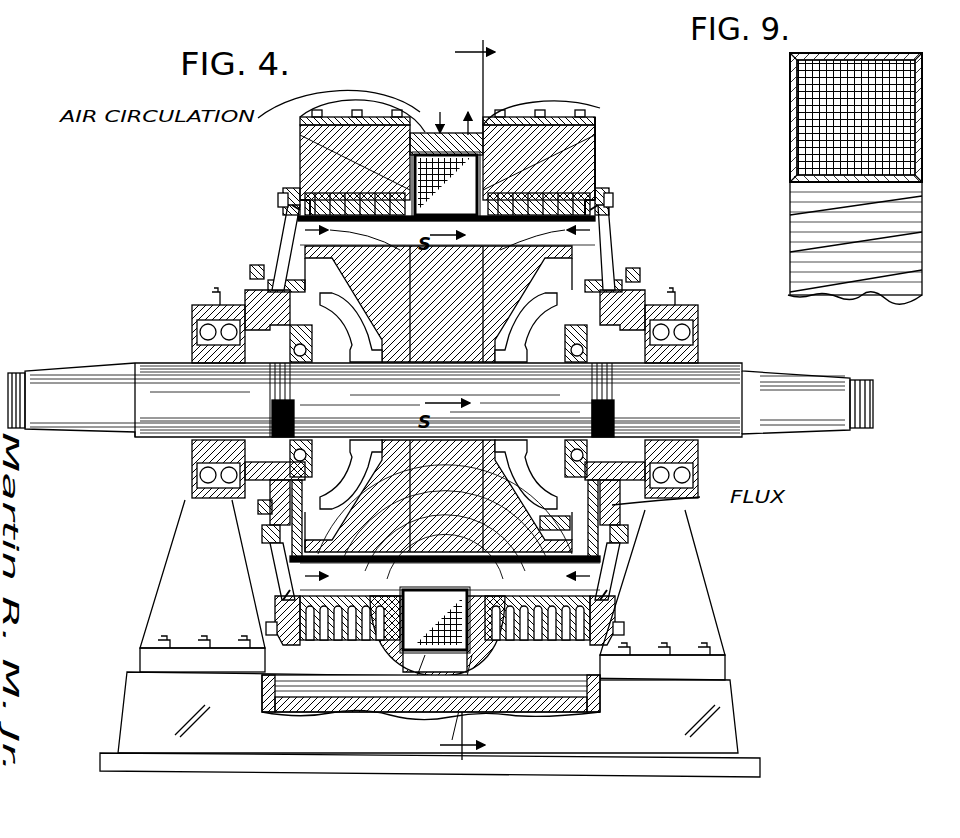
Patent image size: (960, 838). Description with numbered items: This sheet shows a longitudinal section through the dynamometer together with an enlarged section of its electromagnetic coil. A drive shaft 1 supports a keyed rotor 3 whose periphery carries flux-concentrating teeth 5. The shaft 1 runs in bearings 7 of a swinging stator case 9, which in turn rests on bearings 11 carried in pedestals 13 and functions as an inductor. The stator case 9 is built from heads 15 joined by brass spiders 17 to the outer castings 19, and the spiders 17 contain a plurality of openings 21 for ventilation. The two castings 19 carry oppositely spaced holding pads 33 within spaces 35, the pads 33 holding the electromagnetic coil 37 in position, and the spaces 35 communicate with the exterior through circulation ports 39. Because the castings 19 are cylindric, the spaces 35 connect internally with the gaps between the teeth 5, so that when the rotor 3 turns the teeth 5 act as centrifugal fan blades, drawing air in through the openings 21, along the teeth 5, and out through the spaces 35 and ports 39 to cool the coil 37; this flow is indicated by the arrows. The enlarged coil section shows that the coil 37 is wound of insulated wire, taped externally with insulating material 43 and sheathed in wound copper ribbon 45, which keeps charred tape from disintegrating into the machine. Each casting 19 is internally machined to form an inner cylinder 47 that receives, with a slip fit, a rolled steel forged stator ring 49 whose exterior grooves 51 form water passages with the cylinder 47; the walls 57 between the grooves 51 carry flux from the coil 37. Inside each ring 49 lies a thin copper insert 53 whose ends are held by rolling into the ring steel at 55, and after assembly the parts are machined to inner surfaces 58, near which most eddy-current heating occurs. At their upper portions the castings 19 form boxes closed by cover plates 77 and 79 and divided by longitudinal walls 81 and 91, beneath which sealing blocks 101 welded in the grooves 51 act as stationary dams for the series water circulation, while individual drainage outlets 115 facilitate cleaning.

In FIG. 4, the drive shaft 1 is at (722, 395).
In FIG. 4, the rotor 3 is at (505, 290).
In FIG. 4, the flux-concentrating teeth 5 is at (604, 607).
In FIG. 4, the bearings 7 is at (305, 375).
In FIG. 4, the stator case 9 is at (600, 180).
In FIG. 4, the bearings 11 is at (195, 320).
In FIG. 4, the pedestals 13 is at (180, 560).
In FIG. 4, the heads 15 is at (275, 292).
In FIG. 4, the brass spiders 17 is at (272, 268).
In FIG. 4, the outer castings 19 is at (305, 195).
In FIG. 4, the openings 21 is at (285, 235).
In FIG. 4, the holding pads 33 is at (435, 188).
In FIG. 4, the spaces 35 is at (305, 160).
In FIG. 4, the electromagnetic coil 37 is at (440, 402).
In FIG. 9, the electromagnetic coil 37 is at (858, 80).
In FIG. 4, the circulation ports 39 is at (442, 112).
In FIG. 9, the insulating material 43 is at (915, 110).
In FIG. 9, the copper ribbon 45 is at (840, 58).
In FIG. 4, the inner cylinder 47 is at (285, 190).
In FIG. 4, the stator ring 49 is at (612, 212).
In FIG. 4, the grooves 51 is at (278, 197).
In FIG. 4, the copper insert 53 is at (447, 401).
In FIG. 4, the rolled-in ends 55 is at (605, 225).
In FIG. 4, the walls 57 is at (380, 118).
In FIG. 4, the inner machined surfaces 58 is at (606, 290).
In FIG. 4, the cover plate 77 is at (345, 118).
In FIG. 4, the cover plate 79 is at (518, 118).
In FIG. 4, the longitudinal wall 81 is at (298, 124).
In FIG. 4, the longitudinal wall 91 is at (598, 128).
In FIG. 4, the sealing blocks 101 is at (282, 192).
In FIG. 4, the drainage outlets 115 is at (315, 625).